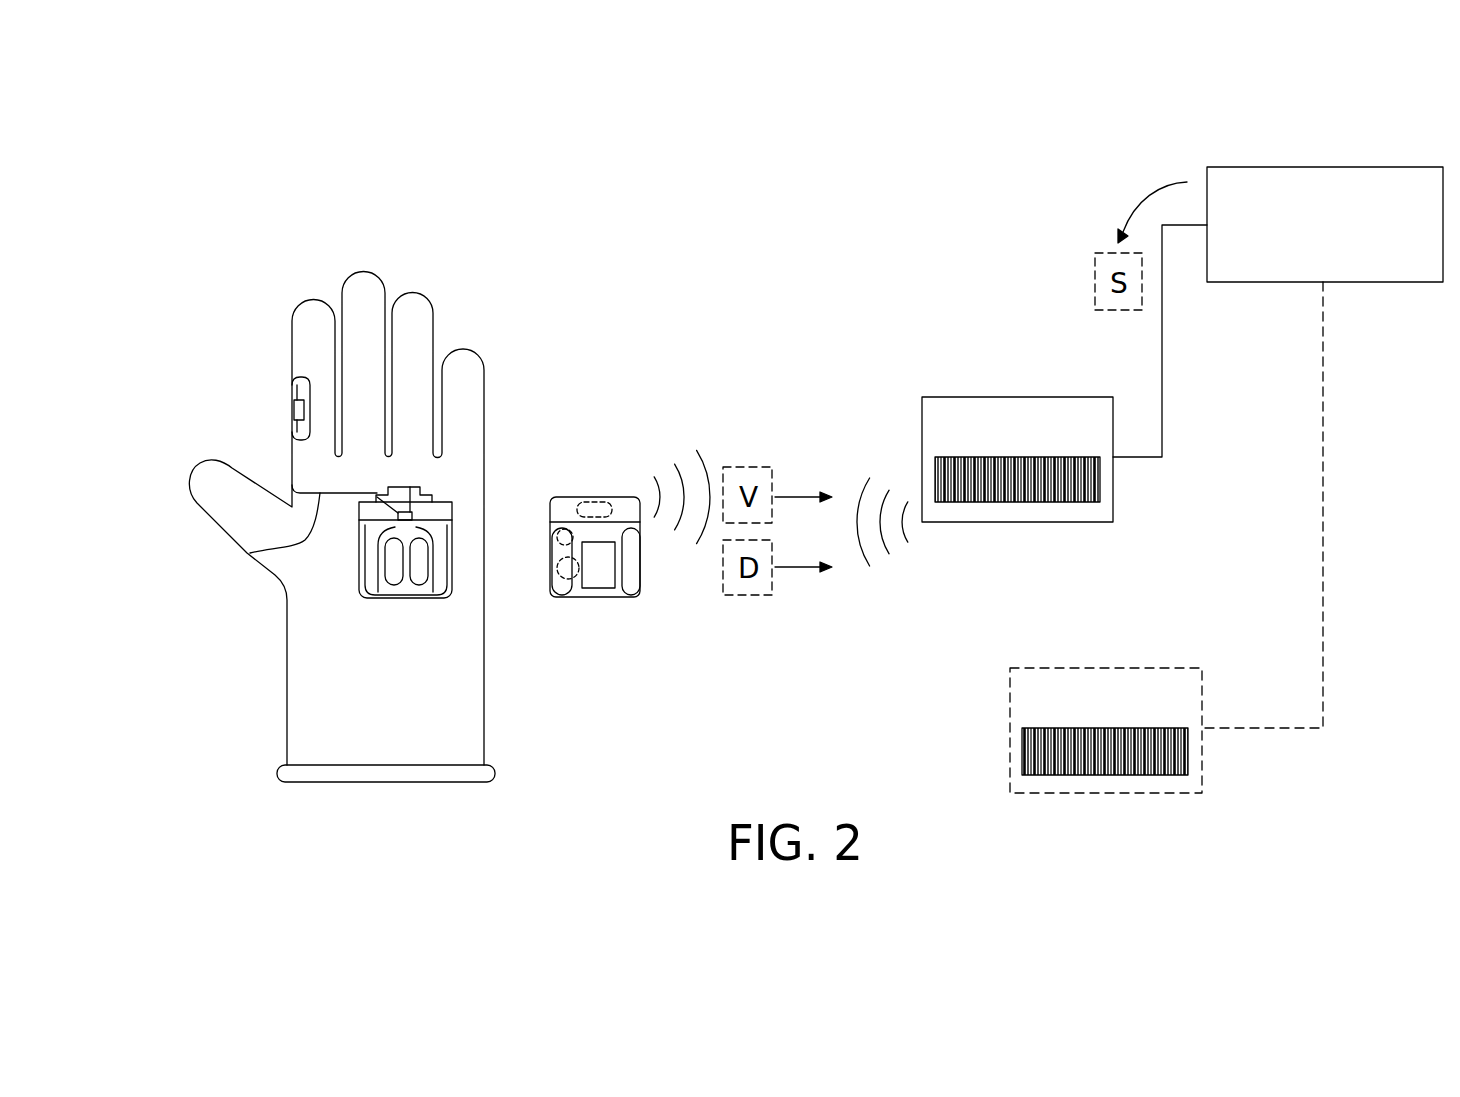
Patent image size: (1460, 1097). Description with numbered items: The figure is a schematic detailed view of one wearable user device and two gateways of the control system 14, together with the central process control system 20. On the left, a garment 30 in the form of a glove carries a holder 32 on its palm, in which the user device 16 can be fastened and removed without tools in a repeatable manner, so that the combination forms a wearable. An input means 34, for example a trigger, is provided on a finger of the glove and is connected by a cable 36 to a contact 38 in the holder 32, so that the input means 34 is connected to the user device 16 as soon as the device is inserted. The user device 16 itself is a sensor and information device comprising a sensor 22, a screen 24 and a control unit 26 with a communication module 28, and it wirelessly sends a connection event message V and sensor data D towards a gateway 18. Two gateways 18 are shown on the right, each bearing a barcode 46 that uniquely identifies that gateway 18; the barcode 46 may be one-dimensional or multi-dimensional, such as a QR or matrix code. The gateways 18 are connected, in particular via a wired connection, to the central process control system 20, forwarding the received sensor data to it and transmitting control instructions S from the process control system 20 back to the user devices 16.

The control system 14 is at (226, 826).
The user device 16 is at (590, 617).
The gateway 18 is at (963, 397).
The central process control system 20 is at (1320, 167).
The sensor 22 is at (600, 500).
The screen 24 is at (603, 597).
The control unit 26 is at (577, 597).
The communication module 28 is at (572, 533).
The garment 30 is at (315, 665).
The holder 32 is at (418, 573).
The input means 34 is at (293, 413).
The cable 36 is at (250, 553).
The contact 38 is at (408, 512).
The barcode 46 is at (1100, 477).